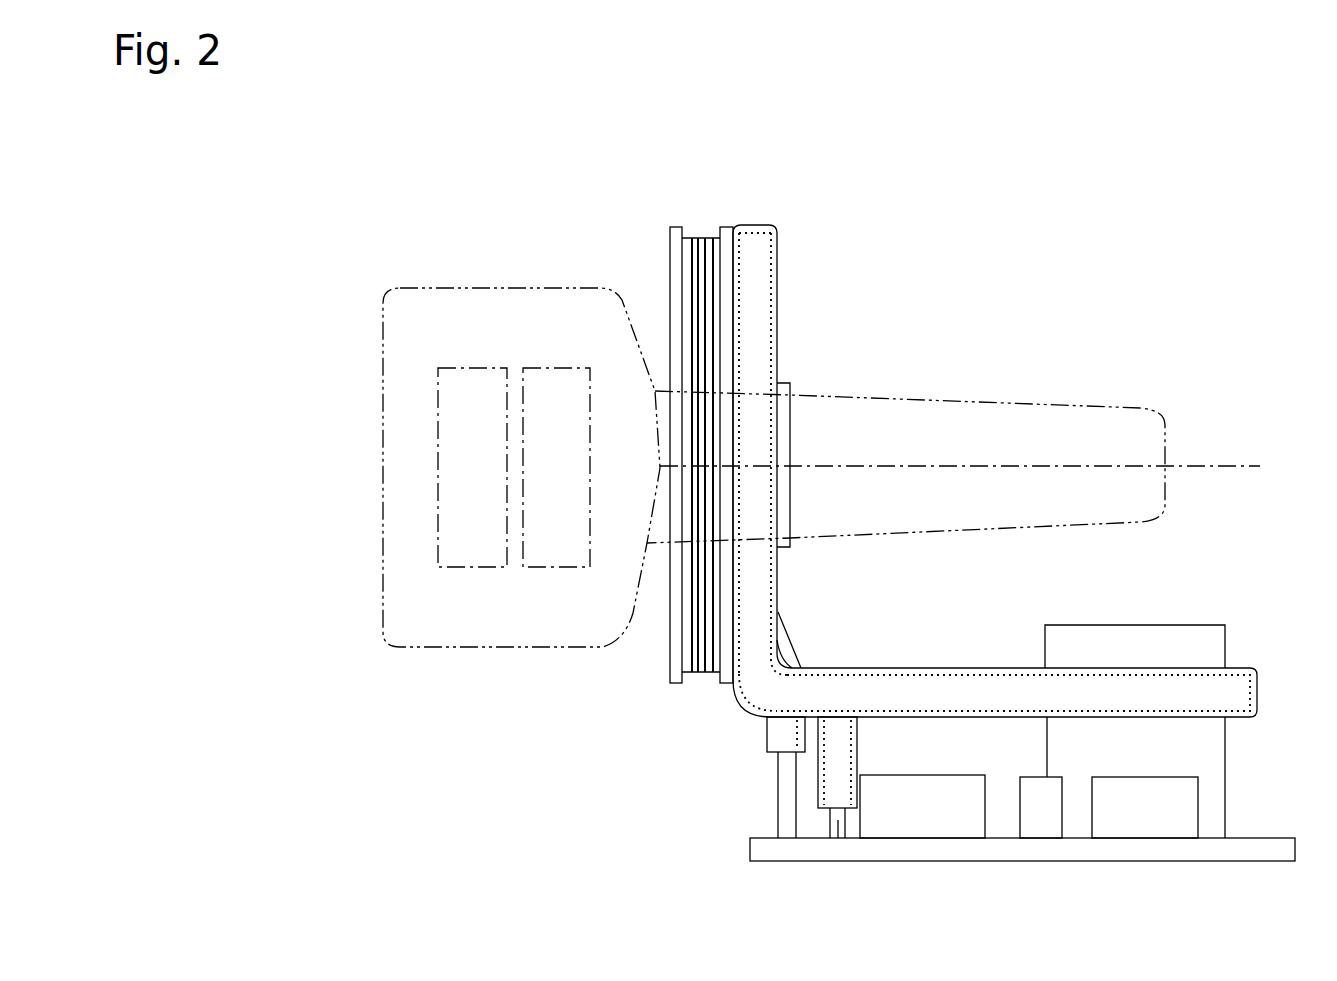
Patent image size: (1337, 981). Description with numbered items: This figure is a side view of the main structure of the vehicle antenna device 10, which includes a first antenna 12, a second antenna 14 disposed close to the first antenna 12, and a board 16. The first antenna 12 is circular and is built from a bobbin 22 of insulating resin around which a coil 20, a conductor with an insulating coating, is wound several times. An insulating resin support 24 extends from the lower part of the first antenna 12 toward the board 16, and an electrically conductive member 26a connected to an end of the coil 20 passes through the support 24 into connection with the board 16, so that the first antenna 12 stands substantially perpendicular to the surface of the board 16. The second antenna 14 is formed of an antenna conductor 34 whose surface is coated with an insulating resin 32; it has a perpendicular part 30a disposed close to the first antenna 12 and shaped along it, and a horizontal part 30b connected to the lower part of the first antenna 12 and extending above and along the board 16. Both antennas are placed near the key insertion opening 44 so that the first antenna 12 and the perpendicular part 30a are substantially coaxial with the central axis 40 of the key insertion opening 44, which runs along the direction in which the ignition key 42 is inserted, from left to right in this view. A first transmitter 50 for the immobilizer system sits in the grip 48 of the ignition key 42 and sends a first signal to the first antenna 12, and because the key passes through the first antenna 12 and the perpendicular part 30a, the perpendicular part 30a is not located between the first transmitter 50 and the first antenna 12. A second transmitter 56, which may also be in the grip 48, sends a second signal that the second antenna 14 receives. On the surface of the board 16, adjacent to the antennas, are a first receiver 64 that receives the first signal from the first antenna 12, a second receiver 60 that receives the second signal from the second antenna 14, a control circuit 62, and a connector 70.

The vehicle antenna device 10 is at (1099, 276).
The first antenna 12 is at (612, 455).
The second antenna 14 is at (991, 572).
The board 16 is at (1247, 850).
The coil 20 is at (673, 302).
The bobbin 22 is at (692, 333).
The support 24 is at (775, 740).
The electrically conductive member 26a is at (779, 790).
The perpendicular part 30a is at (777, 562).
The horizontal part 30b is at (1013, 655).
The insulating resin 32 is at (777, 280).
The antenna conductor 34 is at (765, 320).
The central axis 40 is at (1200, 466).
The ignition key 42 is at (1015, 425).
The key insertion opening 44 is at (790, 427).
The grip 48 is at (521, 502).
The first transmitter 50 is at (560, 555).
The second transmitter 56 is at (482, 555).
The second receiver 60 is at (930, 818).
The control circuit 62 is at (1045, 812).
The first receiver 64 is at (1162, 812).
The connector 70 is at (1222, 748).